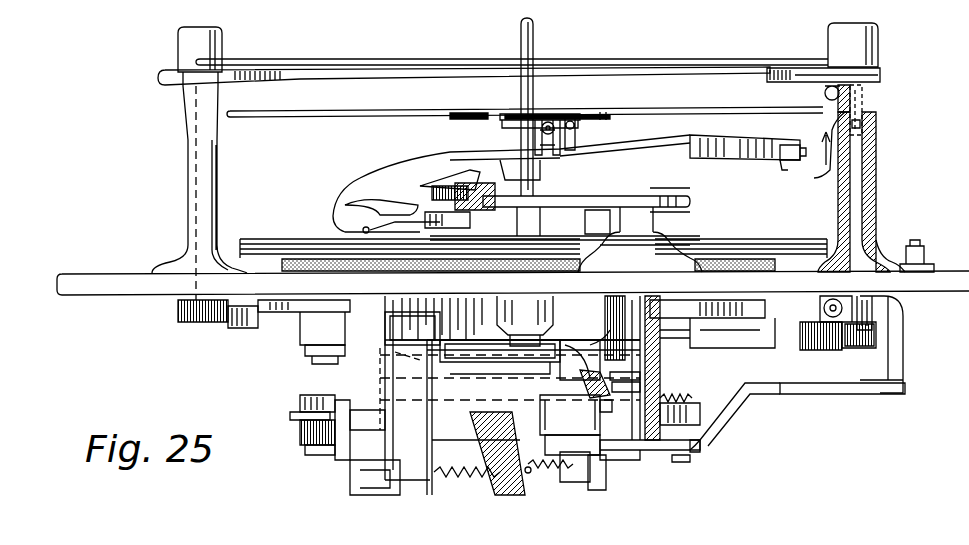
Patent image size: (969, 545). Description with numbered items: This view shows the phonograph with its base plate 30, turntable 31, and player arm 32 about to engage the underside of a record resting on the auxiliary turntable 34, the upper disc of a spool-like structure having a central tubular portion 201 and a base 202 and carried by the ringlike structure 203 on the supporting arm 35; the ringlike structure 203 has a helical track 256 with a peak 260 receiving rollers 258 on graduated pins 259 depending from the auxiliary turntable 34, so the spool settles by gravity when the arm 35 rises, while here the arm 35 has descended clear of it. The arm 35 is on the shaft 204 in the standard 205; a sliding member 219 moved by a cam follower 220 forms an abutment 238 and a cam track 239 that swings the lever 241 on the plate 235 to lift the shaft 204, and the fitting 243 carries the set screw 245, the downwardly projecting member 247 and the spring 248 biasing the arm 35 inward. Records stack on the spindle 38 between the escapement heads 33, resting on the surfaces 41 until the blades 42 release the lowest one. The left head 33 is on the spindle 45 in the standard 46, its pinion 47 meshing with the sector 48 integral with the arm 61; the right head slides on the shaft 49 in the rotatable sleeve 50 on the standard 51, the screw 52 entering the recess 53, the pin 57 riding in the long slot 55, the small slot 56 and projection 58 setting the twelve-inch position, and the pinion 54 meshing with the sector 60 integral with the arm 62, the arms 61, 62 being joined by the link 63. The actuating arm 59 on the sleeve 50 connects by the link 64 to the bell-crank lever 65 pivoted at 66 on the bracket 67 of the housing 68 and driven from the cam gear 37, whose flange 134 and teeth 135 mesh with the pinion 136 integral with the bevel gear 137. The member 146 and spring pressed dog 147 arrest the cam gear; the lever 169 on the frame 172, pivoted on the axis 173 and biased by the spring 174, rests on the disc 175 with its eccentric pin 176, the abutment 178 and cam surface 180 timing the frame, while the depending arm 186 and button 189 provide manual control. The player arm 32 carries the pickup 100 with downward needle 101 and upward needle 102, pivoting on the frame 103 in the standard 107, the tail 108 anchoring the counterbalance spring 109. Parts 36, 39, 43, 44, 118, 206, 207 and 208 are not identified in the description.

The base plate 30 is at (100, 284).
The turntable 31 is at (310, 246).
The player arm 32 is at (412, 195).
The record dropping escapement heads 33 is at (186, 86).
The auxiliary turntable 34 is at (448, 116).
The supporting arm 35 is at (656, 192).
The guide rod 36 is at (372, 116).
The cam gear 37 is at (300, 430).
The turntable spindle 38 is at (521, 46).
The rod 39 is at (430, 68).
The surfaces 41 is at (284, 80).
The blades 42 is at (253, 70).
The cap 43 is at (162, 82).
The clamp 44 is at (766, 74).
The spindle 45 is at (196, 168).
The standard 46 is at (187, 198).
The pinion 47 is at (177, 318).
The sector 48 is at (226, 328).
The shaft 49 is at (862, 158).
The rotatable sleeve 50 is at (878, 184).
The standard 51 is at (872, 224).
The screw 52 is at (824, 94).
The cylindrical recess 53 is at (880, 90).
The pinion 54 is at (848, 344).
The long vertical slot 55 is at (868, 126).
The small slot 56 is at (836, 126).
The pin 57 is at (874, 118).
The projection 58 is at (811, 163).
The actuating arm 59 is at (906, 345).
The sector 60 is at (808, 340).
The arm 61 is at (305, 338).
The arm 62 is at (708, 324).
The link 63 is at (335, 356).
The link 64 is at (818, 388).
The bell-crank lever 65 is at (735, 416).
The pivot 66 is at (688, 448).
The bracket 67 is at (680, 462).
The housing 68 is at (488, 318).
The pickup 100 is at (728, 142).
The record engaging needle 101 is at (783, 168).
The upwardly projecting needle 102 is at (777, 143).
The frame 103 is at (458, 212).
The standard 107 is at (460, 222).
The tail 108 is at (368, 230).
The spring 109 is at (378, 212).
The nut 118 is at (324, 396).
The flange 134 is at (290, 416).
The teeth 135 is at (306, 446).
The pinion 136 is at (570, 415).
The bevel gear 137 is at (582, 477).
The member 146 is at (528, 480).
The spring pressed dog 147 is at (340, 400).
The lever 169 is at (585, 350).
The frame 172 is at (447, 392).
The vertical axis 173 is at (385, 348).
The spring 174 is at (467, 484).
The disc 175 is at (590, 368).
The eccentric pin 176 is at (604, 334).
The abutment 178 is at (500, 453).
The cam surface 180 is at (388, 322).
The depending arm 186 is at (500, 357).
The button 189 is at (926, 252).
The central tubular portion 201 is at (595, 224).
The flat disc 202 is at (605, 248).
The ring formation 203 is at (450, 179).
The shaft 204 is at (650, 350).
The standard 205 is at (596, 266).
The bar 206 is at (556, 197).
The carriage 207 is at (492, 114).
The bar 208 is at (500, 238).
The sliding member 219 is at (560, 442).
The cam follower 220 is at (515, 466).
The plate 235 is at (608, 322).
The abutment 238 is at (640, 386).
The cam track 239 is at (640, 376).
The lever 241 is at (618, 462).
The fitting 243 is at (688, 414).
The set screw 245 is at (600, 404).
The downwardly projecting member 247 is at (610, 476).
The spring 248 is at (691, 393).
The track 256 is at (489, 198).
The rollers 258 is at (618, 138).
The pins 259 is at (565, 128).
The peak 260 is at (512, 183).